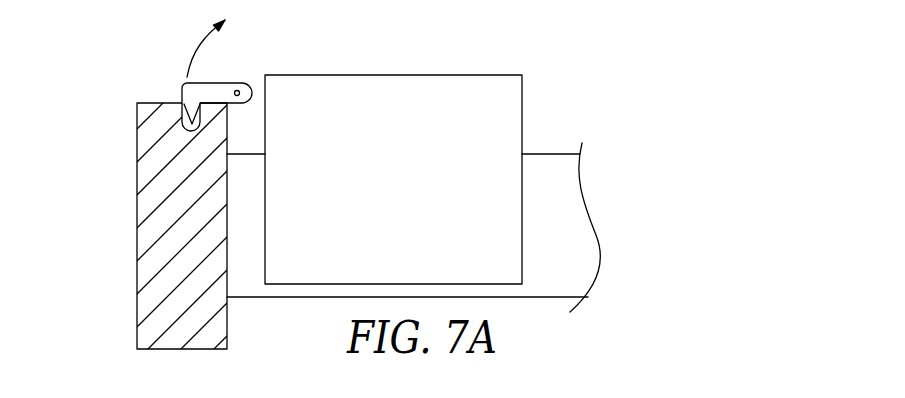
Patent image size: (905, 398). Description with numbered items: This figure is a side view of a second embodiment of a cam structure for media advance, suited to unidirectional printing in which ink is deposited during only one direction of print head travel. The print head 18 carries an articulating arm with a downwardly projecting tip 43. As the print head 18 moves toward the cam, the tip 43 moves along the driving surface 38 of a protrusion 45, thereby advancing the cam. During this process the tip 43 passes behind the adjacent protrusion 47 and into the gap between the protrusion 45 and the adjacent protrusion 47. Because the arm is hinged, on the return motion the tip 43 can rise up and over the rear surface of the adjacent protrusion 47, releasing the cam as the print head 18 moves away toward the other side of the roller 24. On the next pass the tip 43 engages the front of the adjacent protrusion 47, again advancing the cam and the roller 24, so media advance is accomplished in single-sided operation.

The print head 18 is at (418, 190).
The roller 24 is at (544, 154).
The driving surface 38 is at (156, 139).
The downwardly projecting tip 43 is at (183, 86).
The protrusion 45 is at (153, 123).
The adjacent protrusion 47 is at (160, 193).